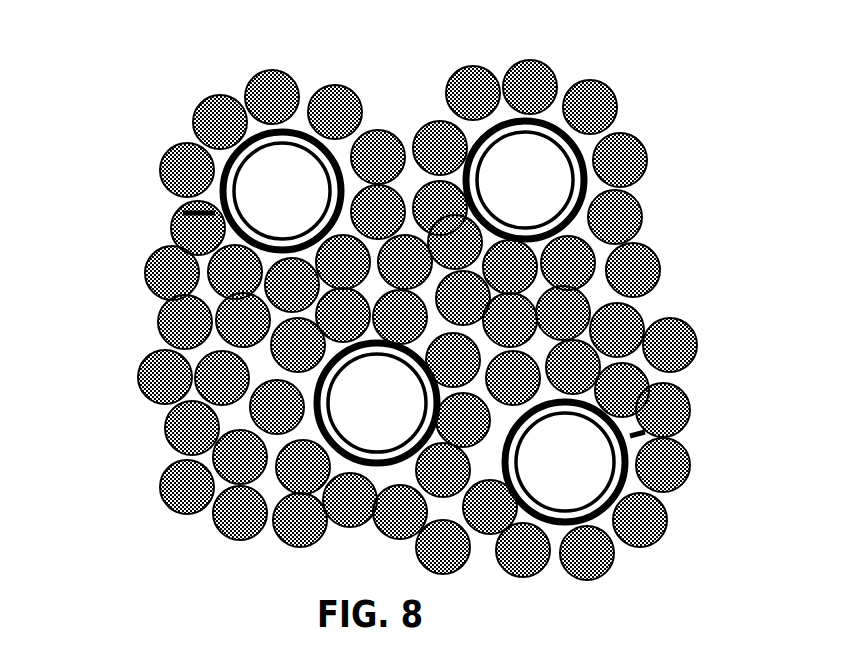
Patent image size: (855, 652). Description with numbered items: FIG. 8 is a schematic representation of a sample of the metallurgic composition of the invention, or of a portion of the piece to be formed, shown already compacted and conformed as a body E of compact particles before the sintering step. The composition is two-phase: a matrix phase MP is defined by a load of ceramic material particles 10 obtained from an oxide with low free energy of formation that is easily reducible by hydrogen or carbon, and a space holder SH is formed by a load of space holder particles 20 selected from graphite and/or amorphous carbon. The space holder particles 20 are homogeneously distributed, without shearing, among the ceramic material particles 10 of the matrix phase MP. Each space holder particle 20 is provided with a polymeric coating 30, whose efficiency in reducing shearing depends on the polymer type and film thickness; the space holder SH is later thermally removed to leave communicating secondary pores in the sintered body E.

The ceramic material particles 10 is at (598, 107).
The space holder particles 20 is at (272, 177).
The coating 30 is at (300, 136).
The space holder SH is at (184, 213).
The matrix phase MP is at (150, 321).
The body E is at (546, 52).